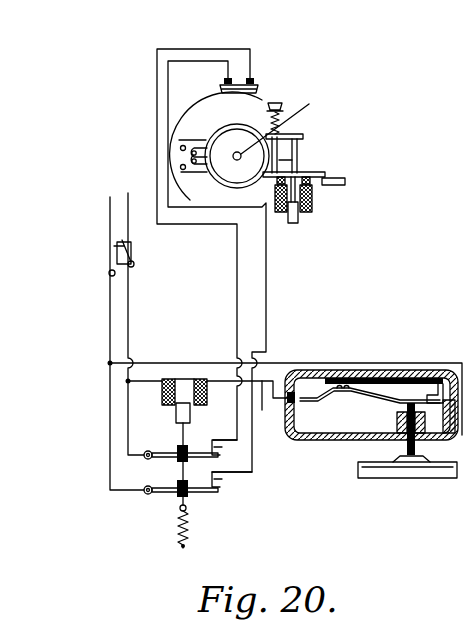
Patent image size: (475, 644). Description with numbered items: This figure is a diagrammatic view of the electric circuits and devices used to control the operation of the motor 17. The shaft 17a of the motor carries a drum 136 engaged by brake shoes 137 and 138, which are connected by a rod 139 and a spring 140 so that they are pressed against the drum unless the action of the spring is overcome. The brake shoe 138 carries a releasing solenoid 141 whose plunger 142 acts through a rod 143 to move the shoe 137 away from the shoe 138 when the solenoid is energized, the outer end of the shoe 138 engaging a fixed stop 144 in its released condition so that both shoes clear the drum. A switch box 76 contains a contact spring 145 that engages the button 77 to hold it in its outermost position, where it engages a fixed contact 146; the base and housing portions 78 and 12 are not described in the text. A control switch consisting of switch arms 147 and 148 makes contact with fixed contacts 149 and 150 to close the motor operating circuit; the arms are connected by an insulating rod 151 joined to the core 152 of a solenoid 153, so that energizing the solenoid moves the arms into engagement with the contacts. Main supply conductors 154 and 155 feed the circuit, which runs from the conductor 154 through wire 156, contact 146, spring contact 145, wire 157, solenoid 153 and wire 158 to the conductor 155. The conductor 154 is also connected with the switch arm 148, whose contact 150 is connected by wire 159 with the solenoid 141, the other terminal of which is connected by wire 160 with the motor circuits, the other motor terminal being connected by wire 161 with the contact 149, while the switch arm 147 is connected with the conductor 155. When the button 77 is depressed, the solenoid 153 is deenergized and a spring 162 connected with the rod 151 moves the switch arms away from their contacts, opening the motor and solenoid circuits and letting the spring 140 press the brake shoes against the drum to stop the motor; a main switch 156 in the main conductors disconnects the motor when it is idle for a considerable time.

The housing 12 is at (474, 296).
The motor 17 is at (208, 99).
The shaft 17a is at (289, 118).
The switch box 76 is at (330, 441).
The button 77 is at (400, 448).
The base plate 78 is at (393, 480).
The drum 136 is at (279, 146).
The brake shoe 137 is at (303, 136).
The brake shoe 138 is at (345, 177).
The rod 139 is at (302, 141).
The spring 140 is at (280, 102).
The releasing solenoid 141 is at (312, 207).
The plunger 142 is at (297, 223).
The rod 143 is at (299, 160).
The fixed stop 144 is at (340, 185).
The contact spring 145 is at (368, 397).
The fixed contact 146 is at (440, 437).
The switch arm 147 is at (194, 455).
The switch arm 148 is at (210, 492).
The fixed contact 149 is at (227, 442).
The fixed contact 150 is at (224, 482).
The rod 151 is at (172, 440).
The core 152 is at (175, 410).
The solenoid 153 is at (160, 400).
The main supply conductor 154 is at (110, 200).
The main supply conductor 155 is at (129, 193).
The wire 156 is at (110, 262).
The wire 157 is at (272, 405).
The wire 158 is at (135, 385).
The wire 159 is at (222, 491).
The wire 160 is at (183, 60).
The wire 161 is at (228, 50).
The spring 162 is at (176, 534).